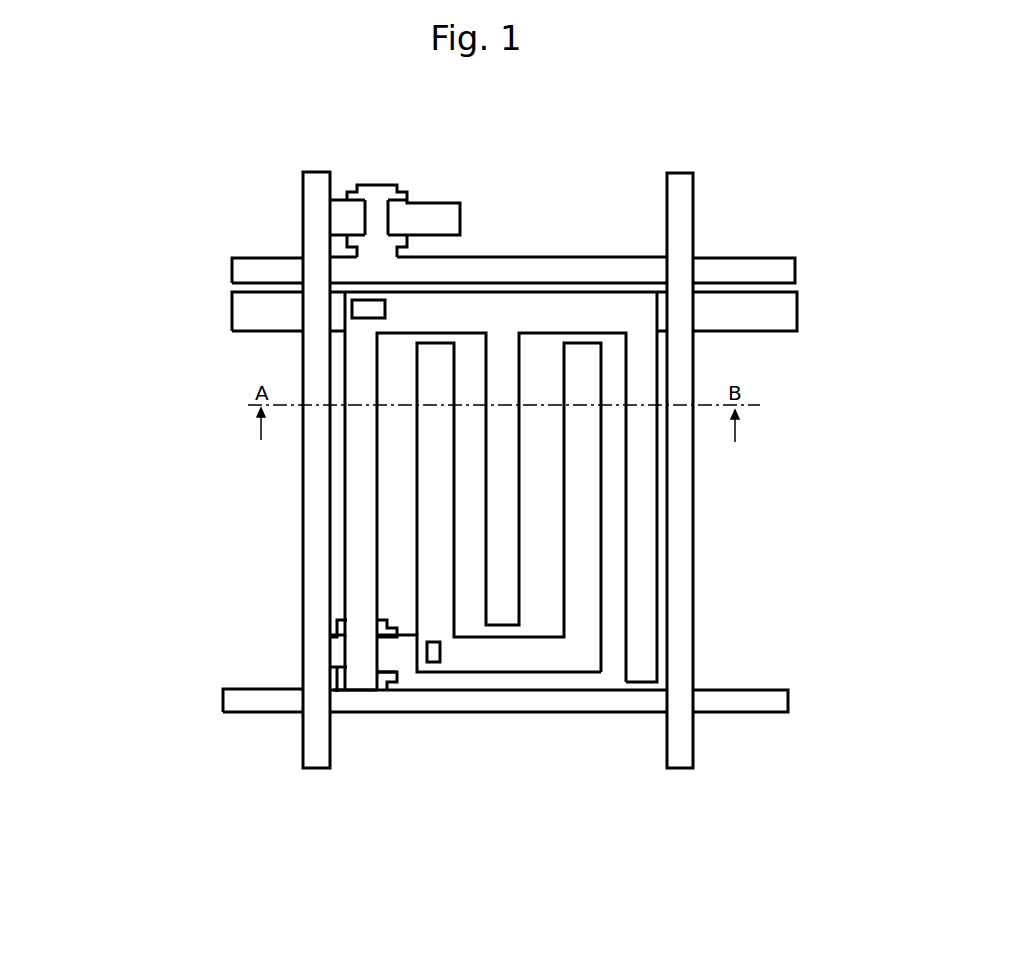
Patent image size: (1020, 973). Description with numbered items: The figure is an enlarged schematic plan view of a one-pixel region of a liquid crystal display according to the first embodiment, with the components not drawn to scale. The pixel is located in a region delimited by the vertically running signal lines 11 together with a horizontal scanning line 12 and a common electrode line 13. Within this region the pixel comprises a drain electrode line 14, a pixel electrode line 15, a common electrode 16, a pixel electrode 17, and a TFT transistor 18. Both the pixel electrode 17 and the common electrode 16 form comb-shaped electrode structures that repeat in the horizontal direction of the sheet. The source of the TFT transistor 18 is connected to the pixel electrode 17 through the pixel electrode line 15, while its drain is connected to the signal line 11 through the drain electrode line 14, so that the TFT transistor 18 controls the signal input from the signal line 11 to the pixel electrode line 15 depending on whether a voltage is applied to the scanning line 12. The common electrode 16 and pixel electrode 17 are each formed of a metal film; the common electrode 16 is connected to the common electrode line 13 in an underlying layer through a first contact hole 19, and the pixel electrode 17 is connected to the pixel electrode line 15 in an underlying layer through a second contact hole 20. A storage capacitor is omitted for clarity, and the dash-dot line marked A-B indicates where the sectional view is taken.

The signal line 11 is at (723, 205).
The scanning line 12 is at (250, 268).
The common electrode line 13 is at (243, 310).
The drain electrode line 14 is at (334, 653).
The pixel electrode line 15 is at (412, 655).
The common electrode 16 is at (362, 510).
The pixel electrode 17 is at (587, 532).
The TFT transistor 18 is at (407, 190).
The first contact hole 19 is at (378, 310).
The second contact hole 20 is at (434, 662).